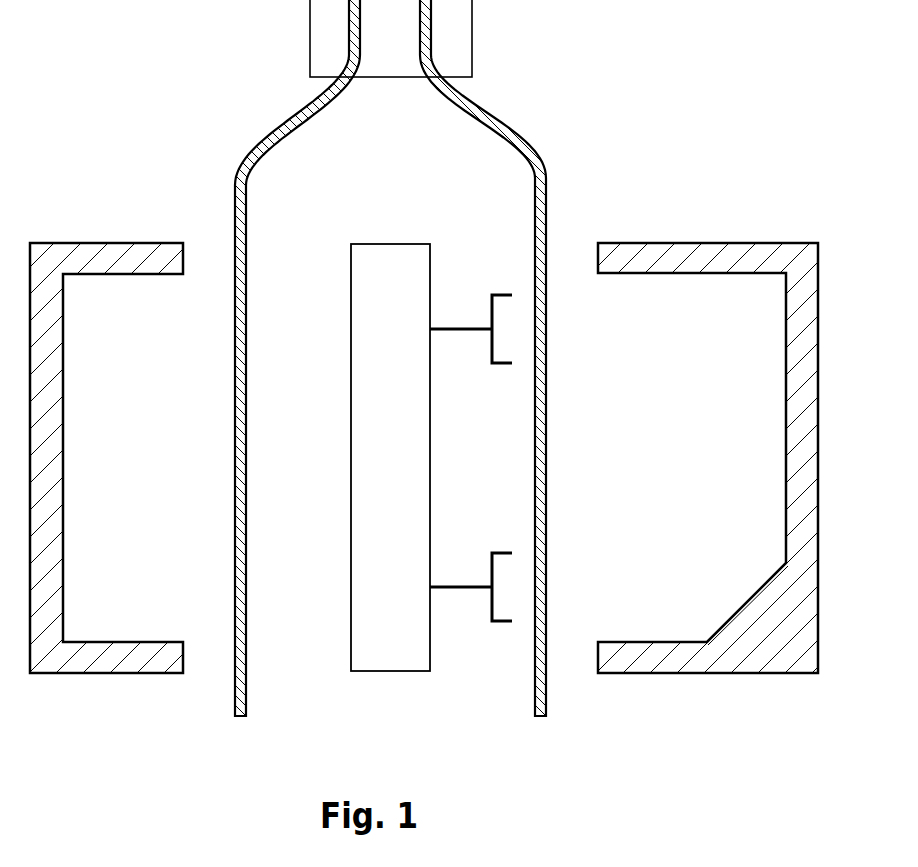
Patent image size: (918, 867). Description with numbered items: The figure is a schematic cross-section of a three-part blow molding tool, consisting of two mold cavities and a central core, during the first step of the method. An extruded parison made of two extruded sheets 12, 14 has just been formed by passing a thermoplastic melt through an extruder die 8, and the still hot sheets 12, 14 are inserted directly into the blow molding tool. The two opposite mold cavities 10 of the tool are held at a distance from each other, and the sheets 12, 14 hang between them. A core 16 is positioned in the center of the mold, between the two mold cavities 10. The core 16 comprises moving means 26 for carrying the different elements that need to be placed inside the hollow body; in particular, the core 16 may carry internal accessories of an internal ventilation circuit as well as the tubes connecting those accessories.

The extruder die 8 is at (478, 0).
The mold cavities 10 is at (108, 659).
The extruded sheet 12 is at (234, 571).
The extruded sheet 14 is at (547, 588).
The core 16 is at (393, 637).
The moving means 26 is at (491, 347).